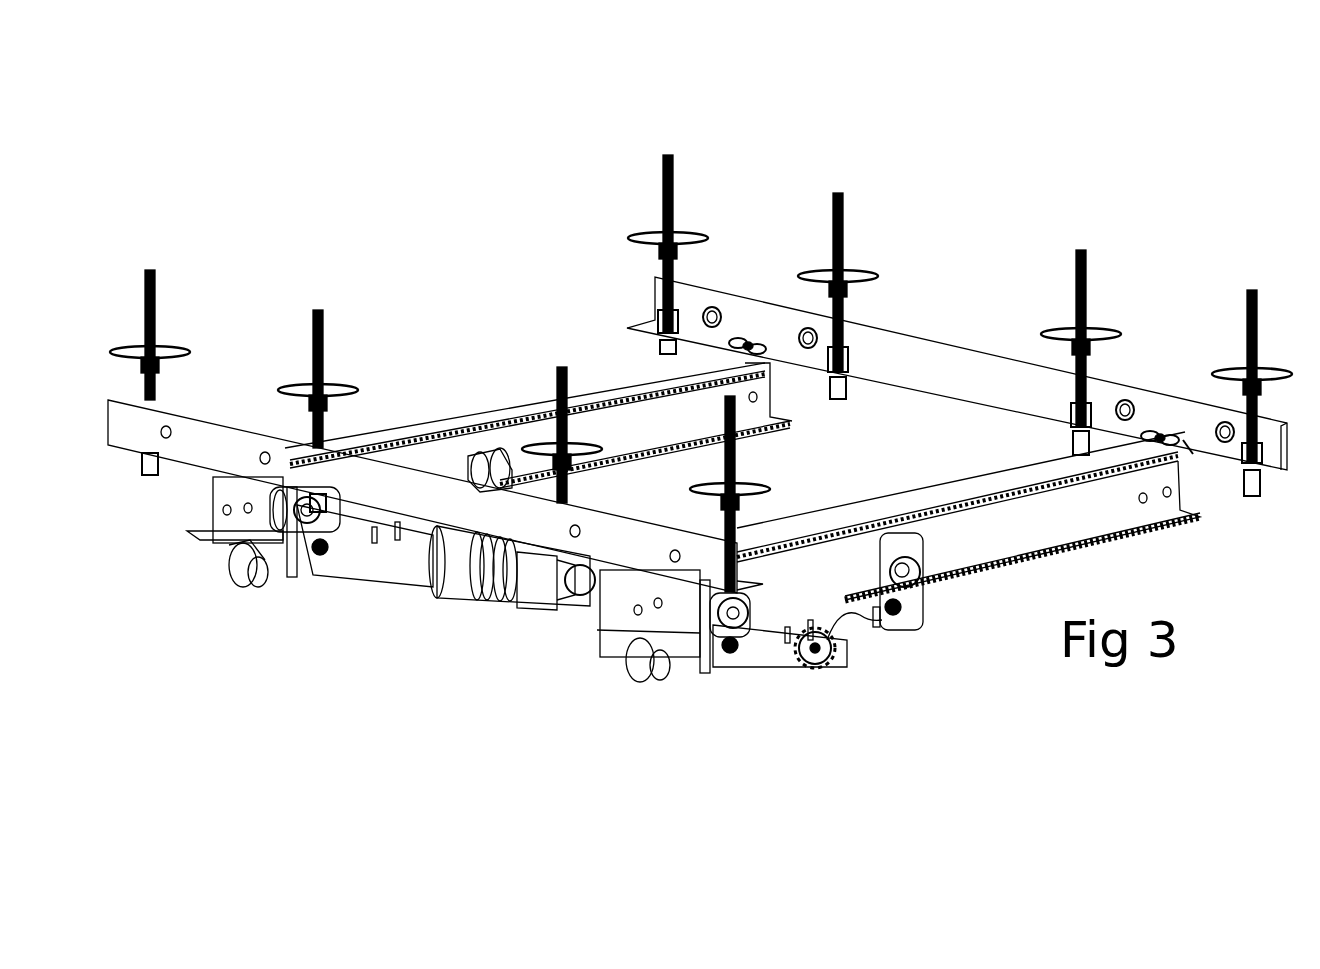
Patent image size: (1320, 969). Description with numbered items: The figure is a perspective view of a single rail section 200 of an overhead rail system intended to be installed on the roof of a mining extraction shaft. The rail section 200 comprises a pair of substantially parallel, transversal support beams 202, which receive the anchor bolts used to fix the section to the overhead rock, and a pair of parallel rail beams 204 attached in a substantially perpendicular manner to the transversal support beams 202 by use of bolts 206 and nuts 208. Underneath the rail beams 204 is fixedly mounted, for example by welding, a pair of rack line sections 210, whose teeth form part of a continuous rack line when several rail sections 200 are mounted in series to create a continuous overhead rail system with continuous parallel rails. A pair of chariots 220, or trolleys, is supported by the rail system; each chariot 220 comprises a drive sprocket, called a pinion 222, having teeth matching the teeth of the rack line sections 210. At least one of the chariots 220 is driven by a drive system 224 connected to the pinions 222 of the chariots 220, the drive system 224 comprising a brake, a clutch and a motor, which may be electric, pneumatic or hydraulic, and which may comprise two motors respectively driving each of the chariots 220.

The rail section 200 is at (228, 172).
The transversal support beam 202 is at (650, 294).
The rail beam 204 is at (828, 512).
The bolt 206 is at (1182, 432).
The nut 208 is at (1190, 466).
The rack line section 210 is at (206, 548).
The chariot 220 is at (357, 560).
The pinion 222 is at (828, 672).
The drive system 224 is at (515, 613).